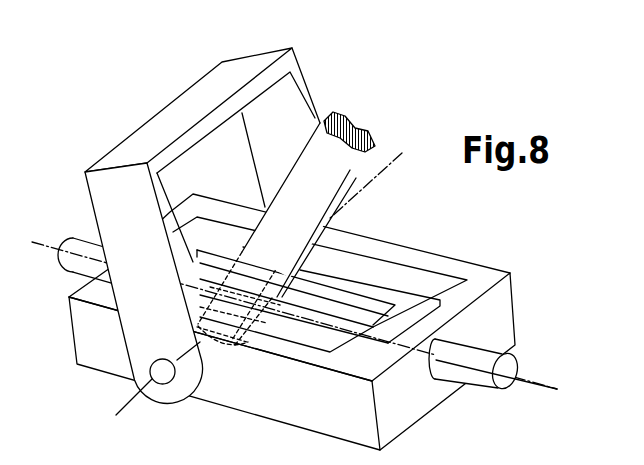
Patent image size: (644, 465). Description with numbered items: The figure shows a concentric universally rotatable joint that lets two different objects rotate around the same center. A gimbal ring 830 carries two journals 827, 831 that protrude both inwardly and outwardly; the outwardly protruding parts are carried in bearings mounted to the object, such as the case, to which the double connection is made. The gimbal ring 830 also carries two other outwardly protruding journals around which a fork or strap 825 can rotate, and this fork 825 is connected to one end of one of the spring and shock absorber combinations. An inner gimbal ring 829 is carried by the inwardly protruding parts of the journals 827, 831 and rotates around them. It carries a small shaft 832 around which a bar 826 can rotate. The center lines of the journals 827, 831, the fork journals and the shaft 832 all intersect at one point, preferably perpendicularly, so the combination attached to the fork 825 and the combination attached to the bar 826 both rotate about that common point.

The fork or strap 825 is at (208, 153).
The bar 826 is at (322, 204).
The journal 827 is at (493, 375).
The inner gimbal ring 829 is at (363, 284).
The gimbal ring 830 is at (487, 275).
The journal 831 is at (90, 250).
The small shaft 832 is at (245, 297).